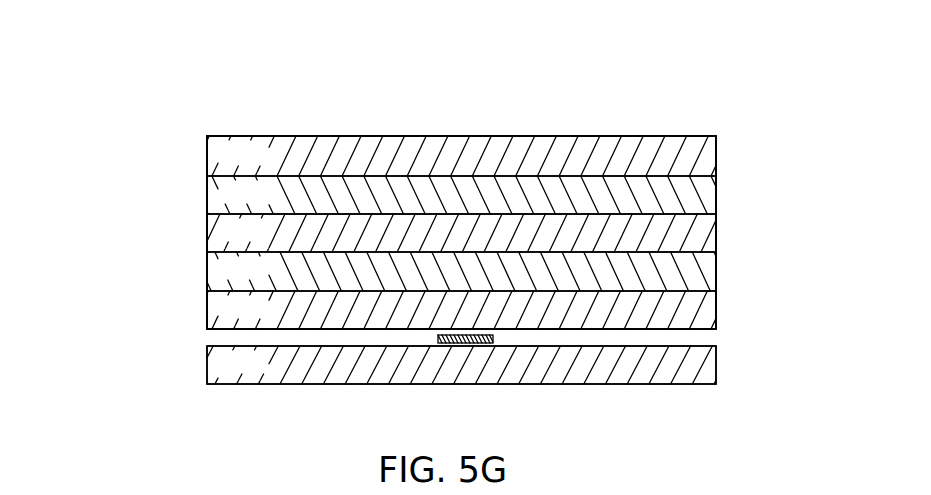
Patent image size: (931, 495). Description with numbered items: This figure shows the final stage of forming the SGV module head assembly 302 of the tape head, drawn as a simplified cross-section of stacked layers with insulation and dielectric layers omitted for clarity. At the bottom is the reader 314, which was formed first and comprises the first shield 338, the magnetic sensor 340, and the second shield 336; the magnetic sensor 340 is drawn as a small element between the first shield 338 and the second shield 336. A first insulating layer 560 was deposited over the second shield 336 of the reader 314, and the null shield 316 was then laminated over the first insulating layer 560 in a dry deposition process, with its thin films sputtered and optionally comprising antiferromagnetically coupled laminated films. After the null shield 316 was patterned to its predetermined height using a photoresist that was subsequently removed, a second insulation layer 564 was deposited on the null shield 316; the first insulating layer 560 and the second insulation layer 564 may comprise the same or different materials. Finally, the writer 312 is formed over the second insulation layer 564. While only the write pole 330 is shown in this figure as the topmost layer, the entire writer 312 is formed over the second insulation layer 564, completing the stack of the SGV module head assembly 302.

The SGV module head assembly 302 is at (683, 55).
The writer 312 is at (738, 113).
The reader 314 is at (128, 263).
The write pole 330 is at (265, 169).
The second insulation layer 564 is at (265, 207).
The null shield 316 is at (265, 245).
The first insulating layer 560 is at (265, 283).
The second shield 336 is at (265, 322).
The first shield 338 is at (265, 377).
The magnetic sensor 340 is at (475, 343).